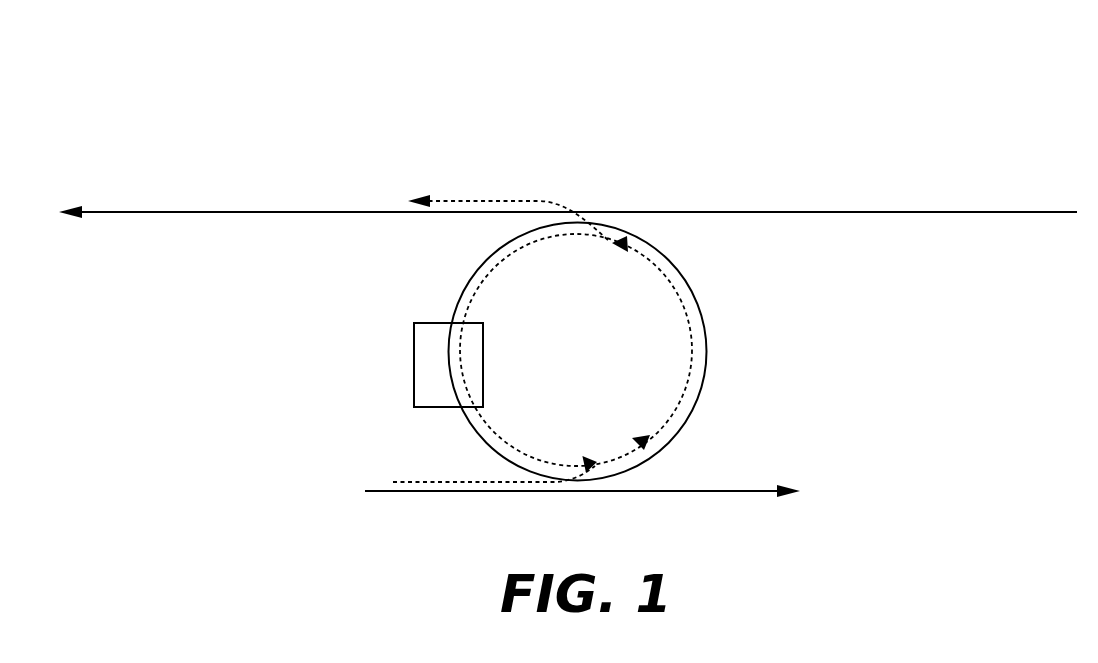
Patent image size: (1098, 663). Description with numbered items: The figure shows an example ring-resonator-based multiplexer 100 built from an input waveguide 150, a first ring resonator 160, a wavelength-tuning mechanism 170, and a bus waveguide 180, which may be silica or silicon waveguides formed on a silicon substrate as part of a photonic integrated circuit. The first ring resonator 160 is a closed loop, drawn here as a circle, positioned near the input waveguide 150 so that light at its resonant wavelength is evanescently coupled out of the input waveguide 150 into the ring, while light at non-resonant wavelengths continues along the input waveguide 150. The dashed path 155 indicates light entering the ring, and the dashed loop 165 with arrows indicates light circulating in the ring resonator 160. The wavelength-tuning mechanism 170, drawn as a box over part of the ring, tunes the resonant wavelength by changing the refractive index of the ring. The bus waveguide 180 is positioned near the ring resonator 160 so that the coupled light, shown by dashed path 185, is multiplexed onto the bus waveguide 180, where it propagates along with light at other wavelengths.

The ring-resonator-based multiplexer 100 is at (155, 78).
The input waveguide 150 is at (730, 490).
The material transfer path to drum 155 is at (412, 482).
The first ring resonator 160 is at (700, 305).
The drum surface path 165 is at (685, 378).
The wavelength-tuning mechanism 170 is at (413, 372).
The bus waveguide 180 is at (903, 212).
The material transfer path from drum 185 is at (500, 200).